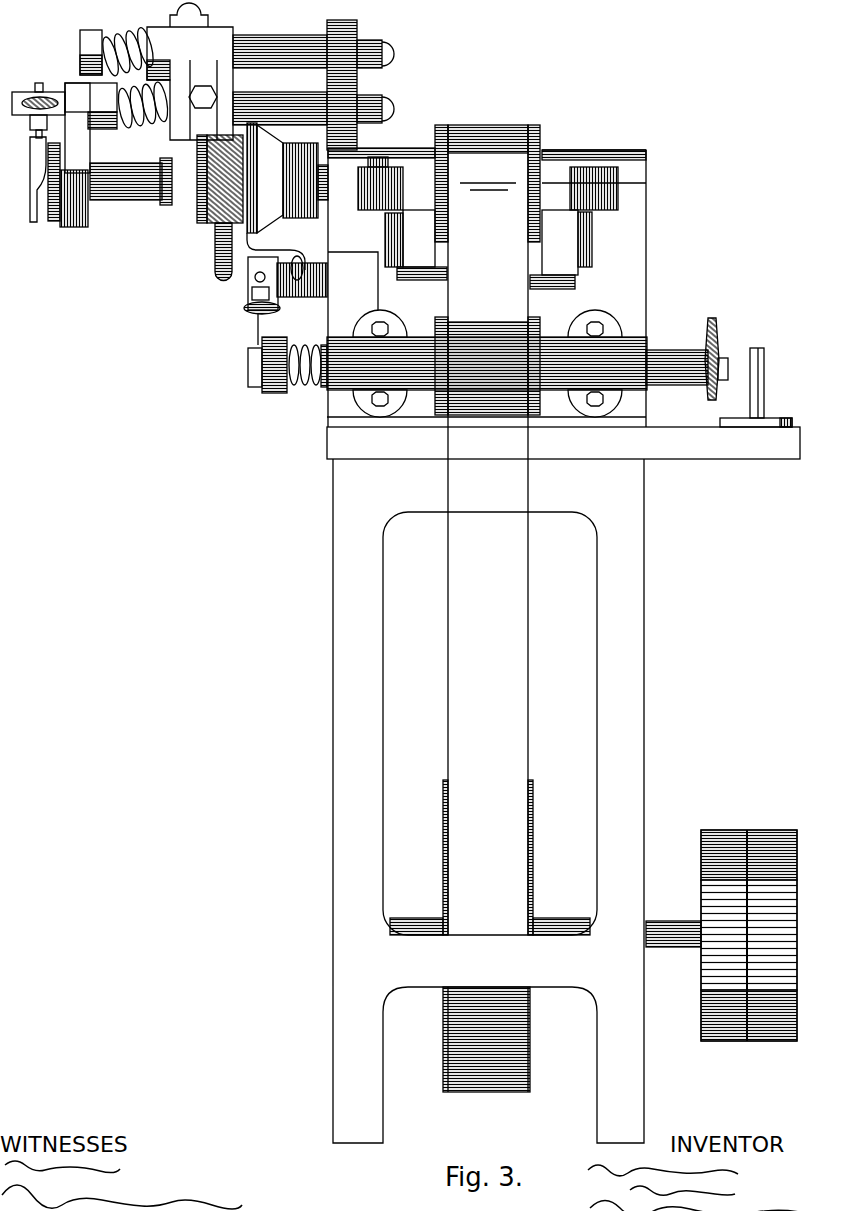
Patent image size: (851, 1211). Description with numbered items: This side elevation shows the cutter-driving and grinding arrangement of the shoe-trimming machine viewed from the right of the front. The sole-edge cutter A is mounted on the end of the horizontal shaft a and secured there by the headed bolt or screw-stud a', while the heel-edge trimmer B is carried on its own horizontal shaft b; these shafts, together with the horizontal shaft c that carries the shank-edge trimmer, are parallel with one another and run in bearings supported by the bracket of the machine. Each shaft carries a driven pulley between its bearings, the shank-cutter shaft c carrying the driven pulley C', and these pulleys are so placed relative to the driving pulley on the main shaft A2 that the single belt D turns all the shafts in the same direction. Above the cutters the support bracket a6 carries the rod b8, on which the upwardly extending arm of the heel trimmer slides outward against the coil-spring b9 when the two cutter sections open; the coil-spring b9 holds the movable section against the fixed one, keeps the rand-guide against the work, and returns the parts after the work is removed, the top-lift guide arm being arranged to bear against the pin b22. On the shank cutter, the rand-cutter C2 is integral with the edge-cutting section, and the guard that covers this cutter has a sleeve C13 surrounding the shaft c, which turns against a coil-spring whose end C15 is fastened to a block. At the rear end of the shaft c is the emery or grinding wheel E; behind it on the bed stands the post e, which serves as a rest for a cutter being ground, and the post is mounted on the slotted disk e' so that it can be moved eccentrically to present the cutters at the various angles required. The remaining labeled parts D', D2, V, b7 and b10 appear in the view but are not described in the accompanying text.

The belt D is at (563, 645).
The belt guide D' is at (504, 857).
The driving shaft D2 is at (678, 948).
The driven pulley C' is at (436, 363).
The rand-cutter C2 is at (275, 393).
The sleeve C13 is at (297, 386).
The spring end C15 is at (324, 390).
The horizontal shaft c is at (677, 359).
The grinding wheel E is at (728, 313).
The post e is at (769, 383).
The disk e' is at (758, 412).
The support bracket a6 is at (358, 84).
The rod b8 is at (313, 108).
The horizontal shaft b is at (356, 160).
The coil-spring b9 is at (138, 126).
The headed bolt or screw-stud a' is at (38, 145).
The sole-edge cutter A is at (50, 230).
The main shaft A2 is at (48, 218).
The horizontal shaft a is at (131, 181).
The heel-edge trimmer B is at (205, 226).
The vertical shaft V is at (215, 270).
The bevel gear b7 is at (256, 214).
The slot b10 is at (300, 262).
The pin b22 is at (325, 262).